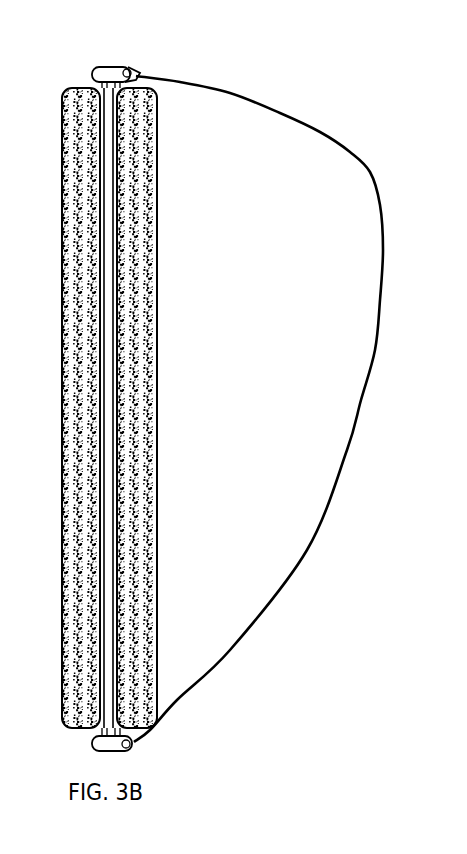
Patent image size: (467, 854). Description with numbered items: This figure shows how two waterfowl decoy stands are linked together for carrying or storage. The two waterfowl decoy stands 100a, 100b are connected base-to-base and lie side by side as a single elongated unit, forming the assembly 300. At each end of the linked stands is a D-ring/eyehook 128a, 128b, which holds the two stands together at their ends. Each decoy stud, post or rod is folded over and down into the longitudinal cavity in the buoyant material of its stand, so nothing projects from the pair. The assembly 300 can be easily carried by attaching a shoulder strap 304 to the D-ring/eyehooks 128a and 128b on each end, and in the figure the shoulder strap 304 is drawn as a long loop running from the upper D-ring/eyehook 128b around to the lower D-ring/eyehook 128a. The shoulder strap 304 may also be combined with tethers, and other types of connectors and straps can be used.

The assembly 300 is at (212, 41).
The waterfowl decoy stand 100a is at (80, 270).
The waterfowl decoy stand 100b is at (135, 270).
The D-ring/eyehook 128a is at (93, 743).
The D-ring/eyehook 128b is at (112, 72).
The shoulder strap 304 is at (382, 203).